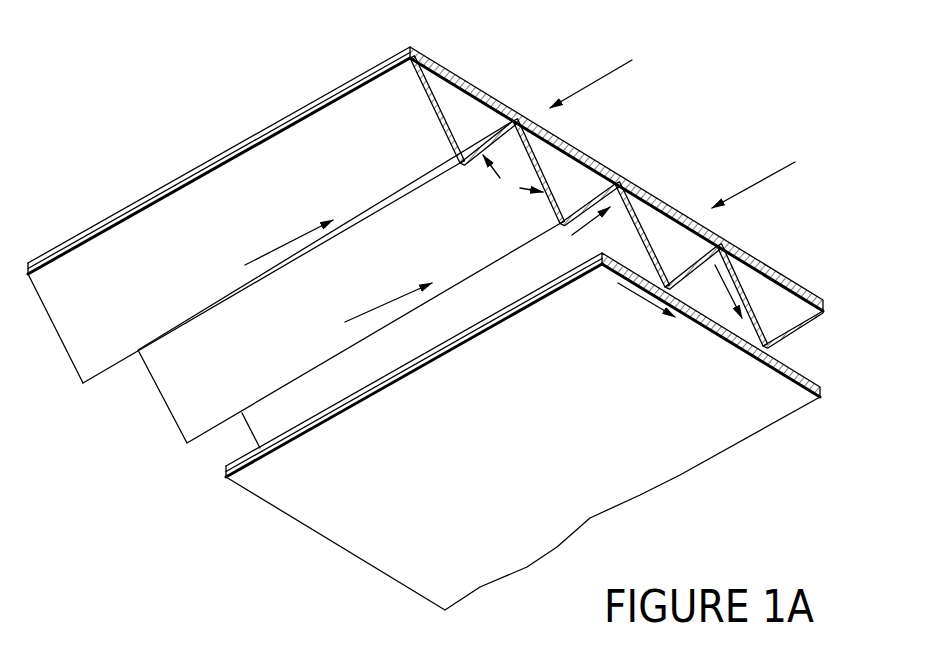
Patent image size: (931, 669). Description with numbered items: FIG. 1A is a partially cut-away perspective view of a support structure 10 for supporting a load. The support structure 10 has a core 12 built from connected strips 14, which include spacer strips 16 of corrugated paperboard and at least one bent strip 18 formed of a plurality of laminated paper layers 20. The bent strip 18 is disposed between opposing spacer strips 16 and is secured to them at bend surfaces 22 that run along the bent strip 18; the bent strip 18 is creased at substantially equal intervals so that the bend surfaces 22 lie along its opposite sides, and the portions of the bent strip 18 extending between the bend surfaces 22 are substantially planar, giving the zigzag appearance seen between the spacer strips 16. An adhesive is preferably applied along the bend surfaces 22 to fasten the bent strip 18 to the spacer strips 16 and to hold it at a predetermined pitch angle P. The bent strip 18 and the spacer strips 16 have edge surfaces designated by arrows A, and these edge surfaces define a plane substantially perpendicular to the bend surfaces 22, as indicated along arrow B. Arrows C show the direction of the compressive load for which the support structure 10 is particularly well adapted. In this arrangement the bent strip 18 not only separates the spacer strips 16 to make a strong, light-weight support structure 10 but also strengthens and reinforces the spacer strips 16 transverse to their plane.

The support structure 10 is at (705, 109).
The core 12 is at (791, 242).
The connected strips 14 is at (803, 368).
The spacer strips 16 is at (408, 46).
The bent strip 18 is at (273, 182).
The laminated paper layers 20 is at (443, 115).
The bend surfaces 22 is at (109, 367).
The edge surfaces A is at (657, 265).
The edge surface plane direction B is at (338, 271).
The compressive load direction C is at (672, 130).
The pitch angle P is at (513, 176).